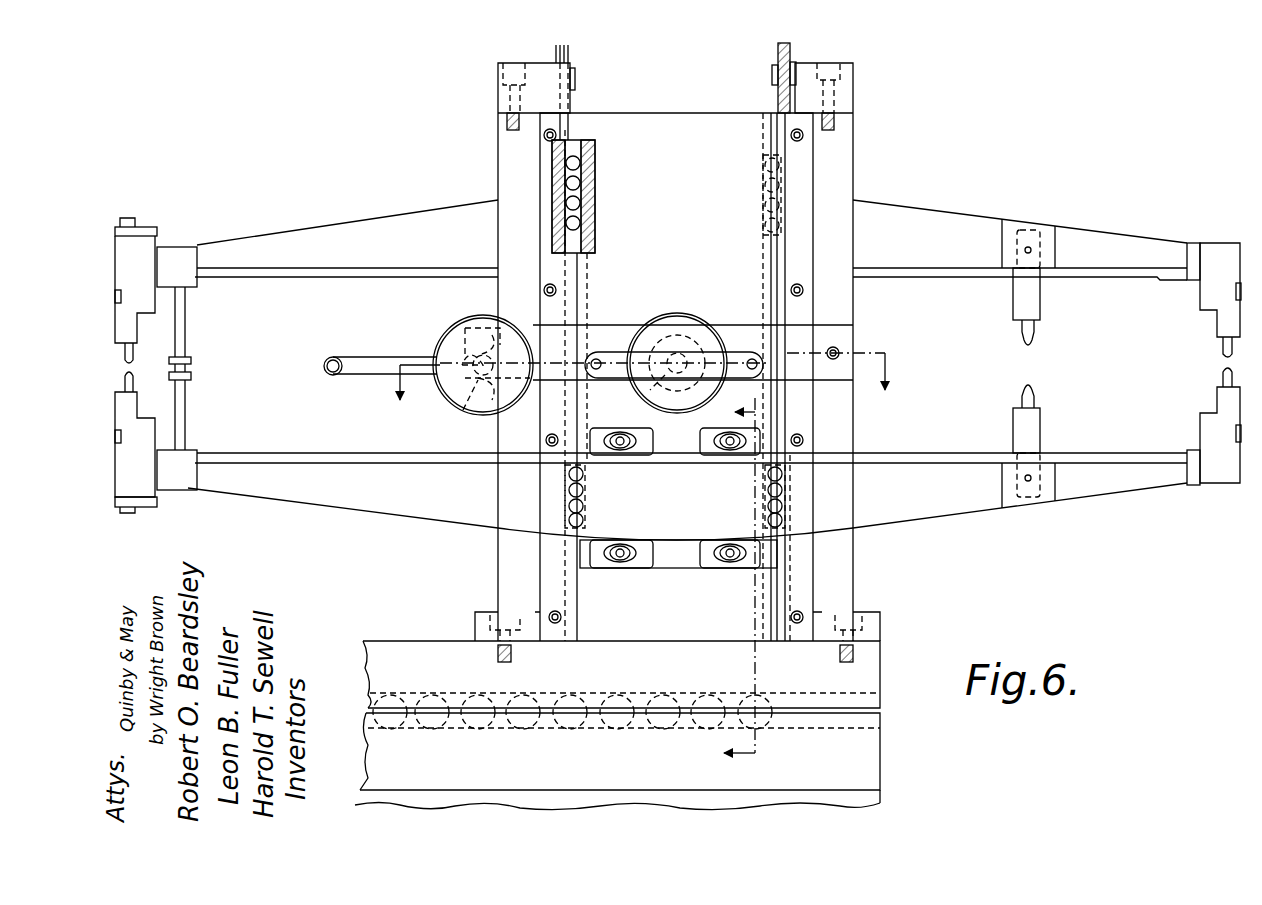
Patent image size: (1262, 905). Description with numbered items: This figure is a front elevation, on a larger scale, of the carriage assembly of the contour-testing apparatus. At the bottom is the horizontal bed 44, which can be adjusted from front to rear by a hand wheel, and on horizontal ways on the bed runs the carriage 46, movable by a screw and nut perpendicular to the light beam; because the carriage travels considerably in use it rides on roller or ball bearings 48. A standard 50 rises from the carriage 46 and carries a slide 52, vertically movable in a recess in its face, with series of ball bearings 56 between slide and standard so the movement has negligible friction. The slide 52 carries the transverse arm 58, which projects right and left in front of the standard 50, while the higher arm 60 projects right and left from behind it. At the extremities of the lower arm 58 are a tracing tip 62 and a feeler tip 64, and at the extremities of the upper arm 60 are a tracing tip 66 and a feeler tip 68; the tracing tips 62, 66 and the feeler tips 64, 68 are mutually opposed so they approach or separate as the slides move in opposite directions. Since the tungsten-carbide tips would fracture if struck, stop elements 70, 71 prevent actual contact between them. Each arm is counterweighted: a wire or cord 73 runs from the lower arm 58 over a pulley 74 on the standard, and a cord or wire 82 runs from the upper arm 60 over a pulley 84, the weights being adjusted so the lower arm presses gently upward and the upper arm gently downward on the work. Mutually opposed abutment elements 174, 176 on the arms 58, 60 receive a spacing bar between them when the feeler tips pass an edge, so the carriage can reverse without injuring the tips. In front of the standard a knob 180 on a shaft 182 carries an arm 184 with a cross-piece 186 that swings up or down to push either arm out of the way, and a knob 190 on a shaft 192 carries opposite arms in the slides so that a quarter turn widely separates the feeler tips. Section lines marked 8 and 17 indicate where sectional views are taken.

The horizontal bed 44 is at (876, 738).
The carriage 46 is at (876, 664).
The roller or ball bearings 48 is at (432, 694).
The standard 50 is at (500, 192).
The slide 52 is at (690, 125).
The ball bearings 56 is at (590, 188).
The transverse arm 58 is at (336, 512).
The arm 60 is at (326, 226).
The tracing tip 62 is at (124, 379).
The feeler tip 64 is at (1222, 374).
The tracing tip 66 is at (124, 357).
The feeler tip 68 is at (1222, 350).
The stop element 70 is at (190, 380).
The stop element 71 is at (185, 330).
The wire or cord 73 is at (792, 198).
The pulley 74 is at (778, 55).
The cord or wire 82 is at (569, 52).
The pulley 84 is at (556, 52).
The abutment element 174 is at (1022, 388).
The abutment element 176 is at (1020, 342).
The knob 180 is at (460, 320).
The shaft 182 is at (468, 412).
The arm 184 is at (368, 358).
The cross-piece 186 is at (325, 372).
The knob 190 is at (672, 316).
The shaft 192 is at (640, 394).
The section line 8- 8 is at (643, 376).
The section line 17- 17 is at (751, 587).